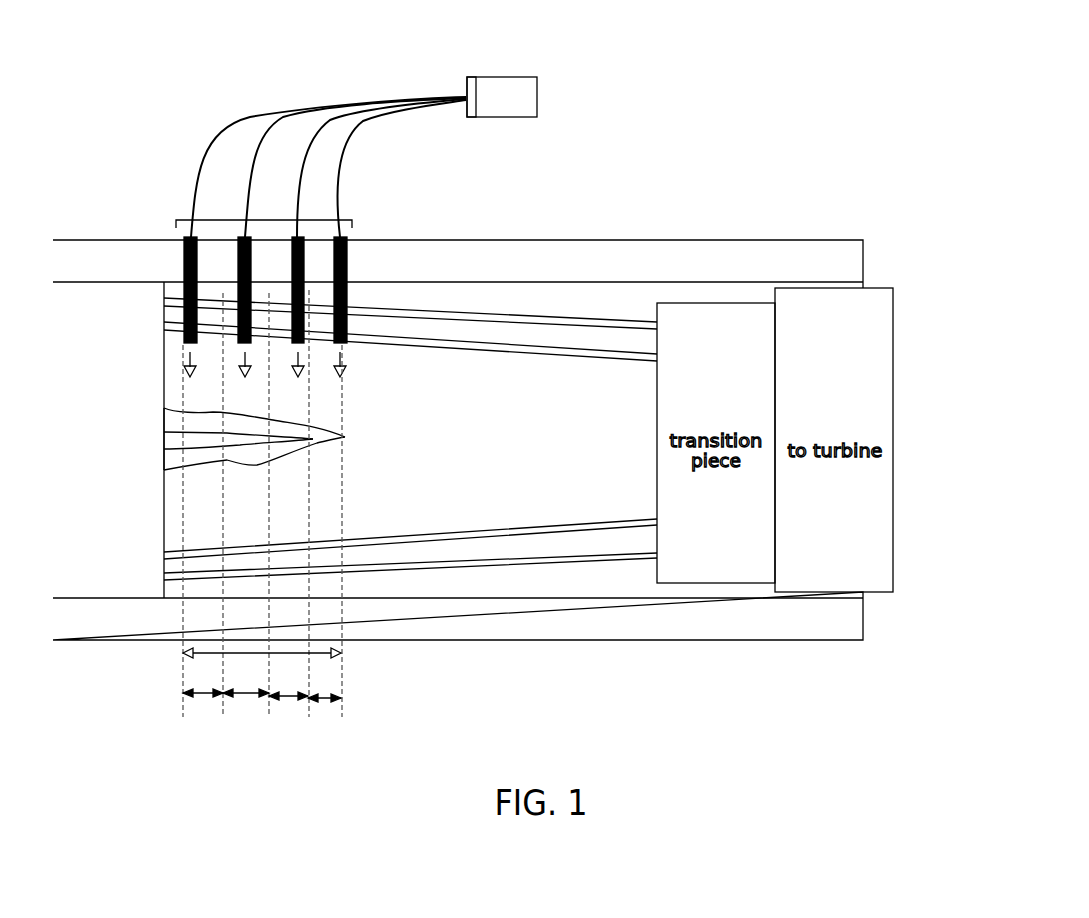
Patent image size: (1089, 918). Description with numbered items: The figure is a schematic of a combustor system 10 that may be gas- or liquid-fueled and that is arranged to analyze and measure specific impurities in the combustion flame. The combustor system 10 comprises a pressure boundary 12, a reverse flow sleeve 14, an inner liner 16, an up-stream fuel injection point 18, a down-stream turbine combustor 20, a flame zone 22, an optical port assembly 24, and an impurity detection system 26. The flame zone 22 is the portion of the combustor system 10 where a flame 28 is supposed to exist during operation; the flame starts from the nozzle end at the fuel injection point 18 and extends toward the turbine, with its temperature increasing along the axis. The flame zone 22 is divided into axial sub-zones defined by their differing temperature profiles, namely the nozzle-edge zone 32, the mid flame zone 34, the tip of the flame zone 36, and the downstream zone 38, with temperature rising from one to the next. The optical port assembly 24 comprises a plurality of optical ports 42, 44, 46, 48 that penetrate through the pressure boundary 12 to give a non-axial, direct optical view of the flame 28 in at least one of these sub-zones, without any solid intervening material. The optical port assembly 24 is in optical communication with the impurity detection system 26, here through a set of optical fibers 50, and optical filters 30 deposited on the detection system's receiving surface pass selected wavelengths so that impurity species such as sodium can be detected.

The combustor system 10 is at (997, 113).
The pressure boundary 12 is at (777, 625).
The reverse flow sleeve 14 is at (573, 565).
The inner liner 16 is at (495, 537).
The up-stream fuel injection point 18 is at (164, 440).
The down-stream turbine combustor 20 is at (440, 515).
The flame zone 22 is at (320, 653).
The optical port assembly 24 is at (205, 220).
The impurity detection system 26 is at (539, 93).
The flame 28 is at (317, 447).
The optical filters 30 is at (472, 80).
The nozzle-edge zone 32 is at (200, 695).
The mid flame zone 34 is at (238, 695).
The tip of the flame zone 36 is at (283, 697).
The downstream zone 38 is at (323, 700).
The optical port 42 is at (183, 338).
The optical port 44 is at (238, 343).
The optical port 46 is at (300, 345).
The optical port 48 is at (347, 327).
The optical fibers 50 is at (305, 148).